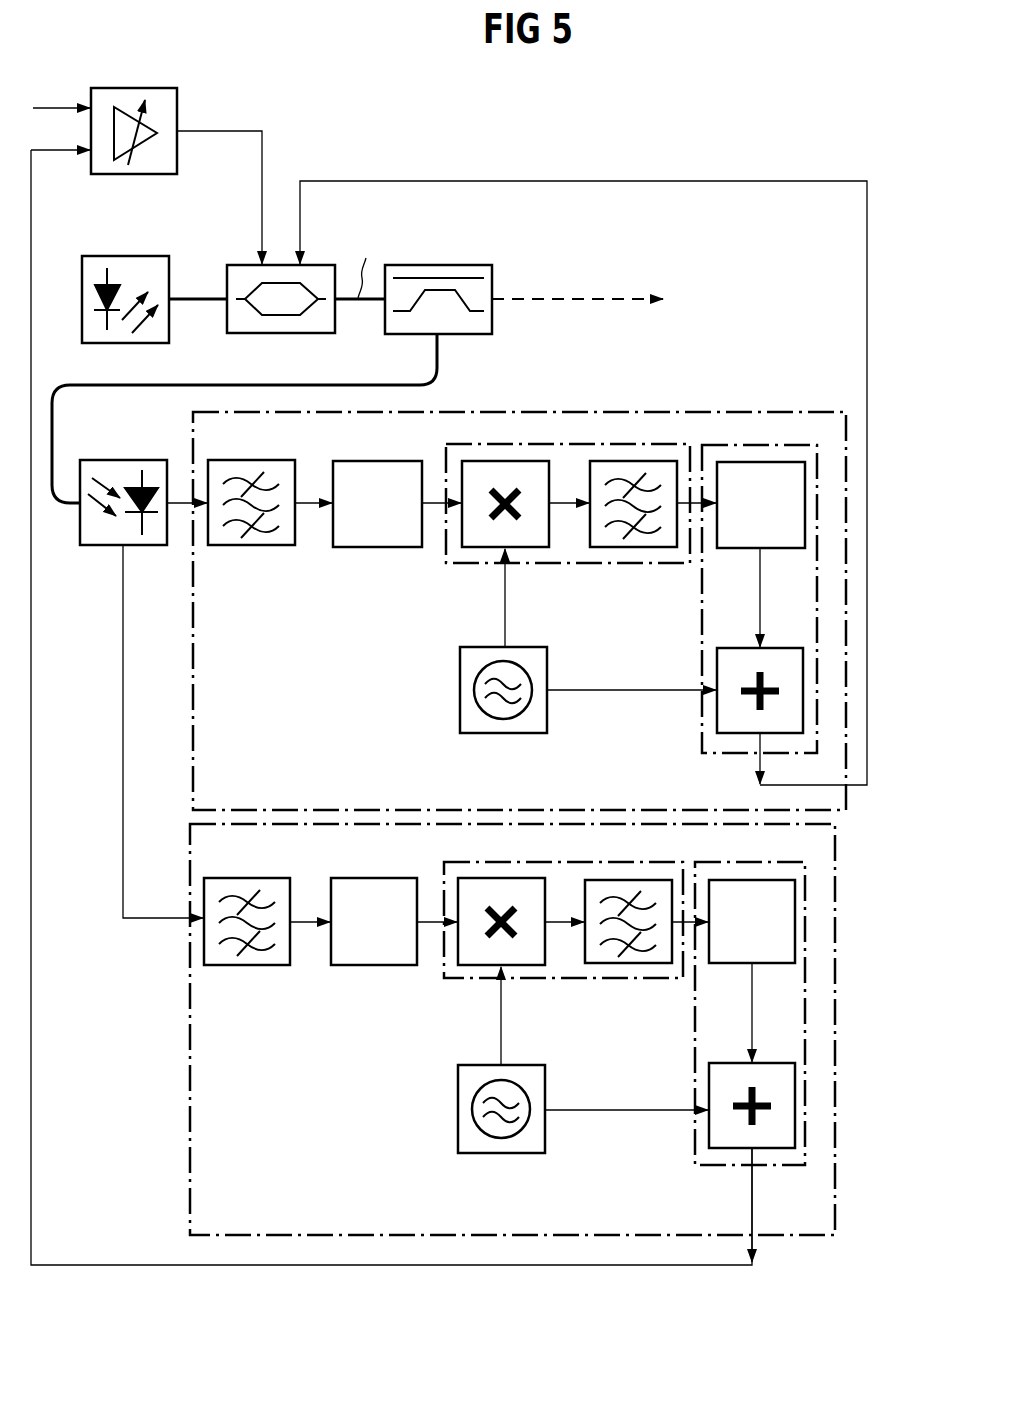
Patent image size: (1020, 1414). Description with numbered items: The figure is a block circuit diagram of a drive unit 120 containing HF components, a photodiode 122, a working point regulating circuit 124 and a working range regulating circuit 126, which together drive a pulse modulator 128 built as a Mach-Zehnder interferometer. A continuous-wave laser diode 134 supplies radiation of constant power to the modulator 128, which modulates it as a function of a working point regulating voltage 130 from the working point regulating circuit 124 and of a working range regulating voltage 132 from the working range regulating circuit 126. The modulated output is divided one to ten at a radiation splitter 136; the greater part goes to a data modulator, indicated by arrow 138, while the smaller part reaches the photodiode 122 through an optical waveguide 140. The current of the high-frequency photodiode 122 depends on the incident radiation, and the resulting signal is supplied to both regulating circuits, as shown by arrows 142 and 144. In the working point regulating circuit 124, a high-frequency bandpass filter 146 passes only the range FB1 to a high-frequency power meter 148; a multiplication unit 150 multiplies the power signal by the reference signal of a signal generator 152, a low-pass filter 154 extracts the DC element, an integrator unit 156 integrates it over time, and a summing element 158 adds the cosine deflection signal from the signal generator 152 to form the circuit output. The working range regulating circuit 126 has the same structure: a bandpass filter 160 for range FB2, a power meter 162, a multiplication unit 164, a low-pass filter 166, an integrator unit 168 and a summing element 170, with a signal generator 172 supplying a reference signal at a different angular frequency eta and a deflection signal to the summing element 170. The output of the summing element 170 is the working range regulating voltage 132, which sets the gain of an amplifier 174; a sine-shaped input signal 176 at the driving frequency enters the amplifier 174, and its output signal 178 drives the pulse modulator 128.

The drive unit 120 is at (150, 824).
The photodiode 122 is at (78, 524).
The working point regulating circuit 124 is at (757, 412).
The working range regulating circuit 126 is at (188, 1165).
The pulse modulator 128 is at (335, 325).
The working point regulating voltage 130 is at (653, 181).
The working range regulating voltage 132 is at (27, 1058).
The laser diode 134 is at (169, 330).
The radiation splitter 136 is at (467, 265).
The arrow 138 is at (582, 298).
The optical waveguide 140 is at (440, 362).
The arrow 142 is at (175, 507).
The arrow 144 is at (123, 870).
The high-frequency bandpass filter 146 is at (250, 547).
The high-frequency power meter 148 is at (338, 549).
The multiplication unit 150 is at (538, 549).
The signal generator 152 is at (460, 690).
The low-pass filter 154 is at (660, 549).
The integrator unit 156 is at (790, 549).
The summing element 158 is at (724, 735).
The bandpass filter 160 is at (244, 967).
The power meter 162 is at (333, 967).
The multiplication unit 164 is at (535, 967).
The low-pass filter 166 is at (657, 965).
The integrator unit 168 is at (782, 965).
The summing element 170 is at (724, 1150).
The signal generator 172 is at (458, 1110).
The amplifier 174 is at (176, 88).
The input signal 176 is at (60, 100).
The output signal 178 is at (252, 130).